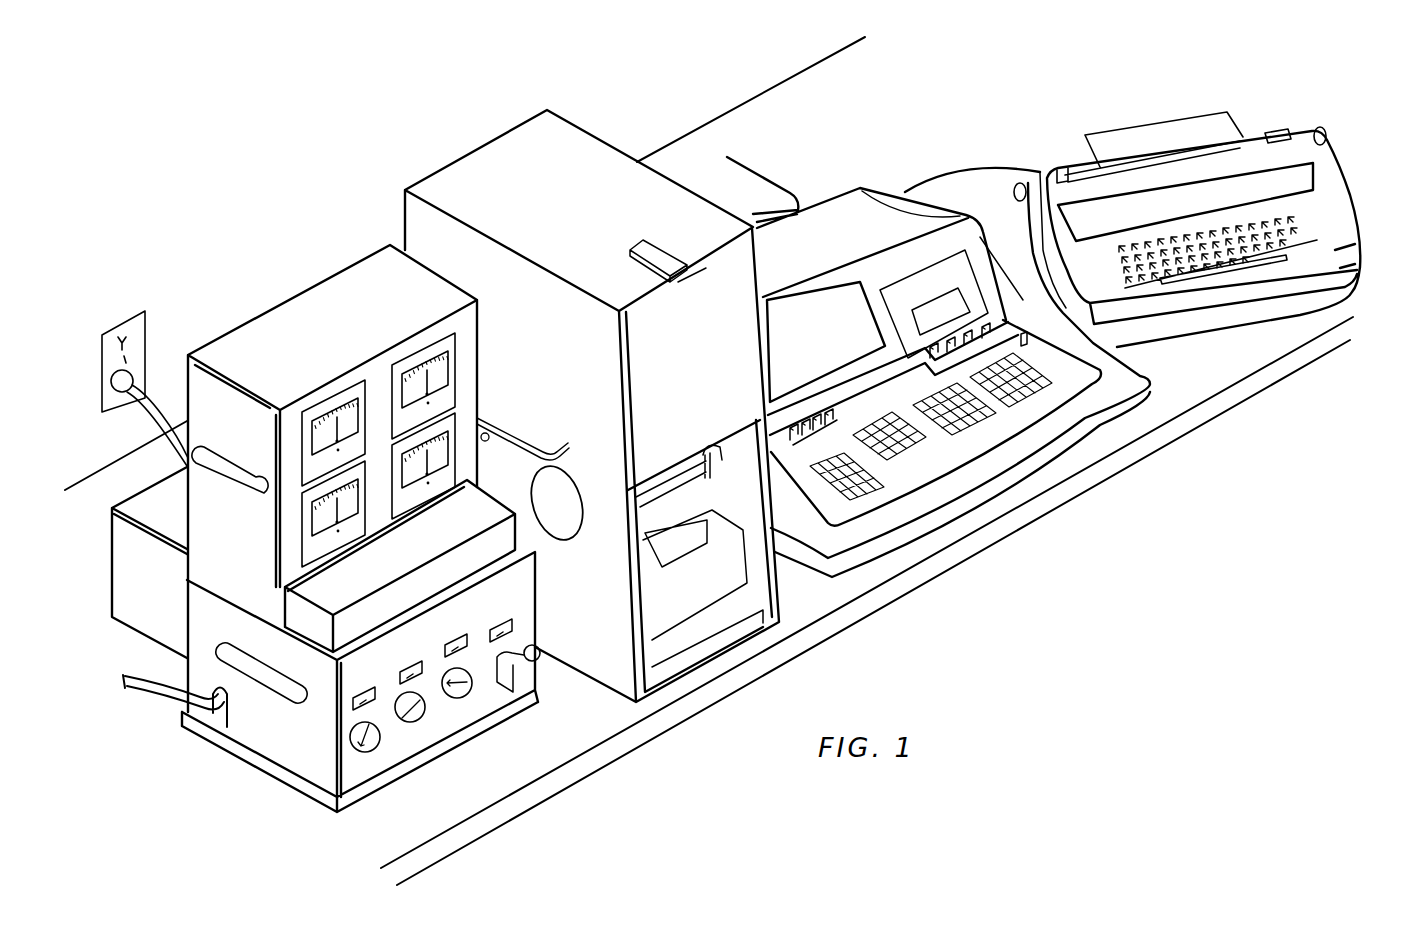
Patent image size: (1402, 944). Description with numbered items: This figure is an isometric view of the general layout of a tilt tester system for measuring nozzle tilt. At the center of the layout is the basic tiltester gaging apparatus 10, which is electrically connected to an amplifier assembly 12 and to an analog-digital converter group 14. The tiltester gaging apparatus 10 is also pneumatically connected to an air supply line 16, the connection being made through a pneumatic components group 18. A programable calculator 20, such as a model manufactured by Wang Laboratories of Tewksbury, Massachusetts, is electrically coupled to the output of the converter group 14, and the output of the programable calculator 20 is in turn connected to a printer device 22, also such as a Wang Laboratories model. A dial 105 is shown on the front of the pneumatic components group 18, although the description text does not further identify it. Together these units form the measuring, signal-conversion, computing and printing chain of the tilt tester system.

The tiltester gaging apparatus 10 is at (477, 149).
The amplifier assembly 12 is at (325, 282).
The analog-digital converter group 14 is at (142, 490).
The air supply line 16 is at (132, 694).
The pneumatic components group 18 is at (384, 652).
The programable calculator 20 is at (887, 553).
The printer device 22 is at (1232, 327).
The control dial 105 is at (377, 742).